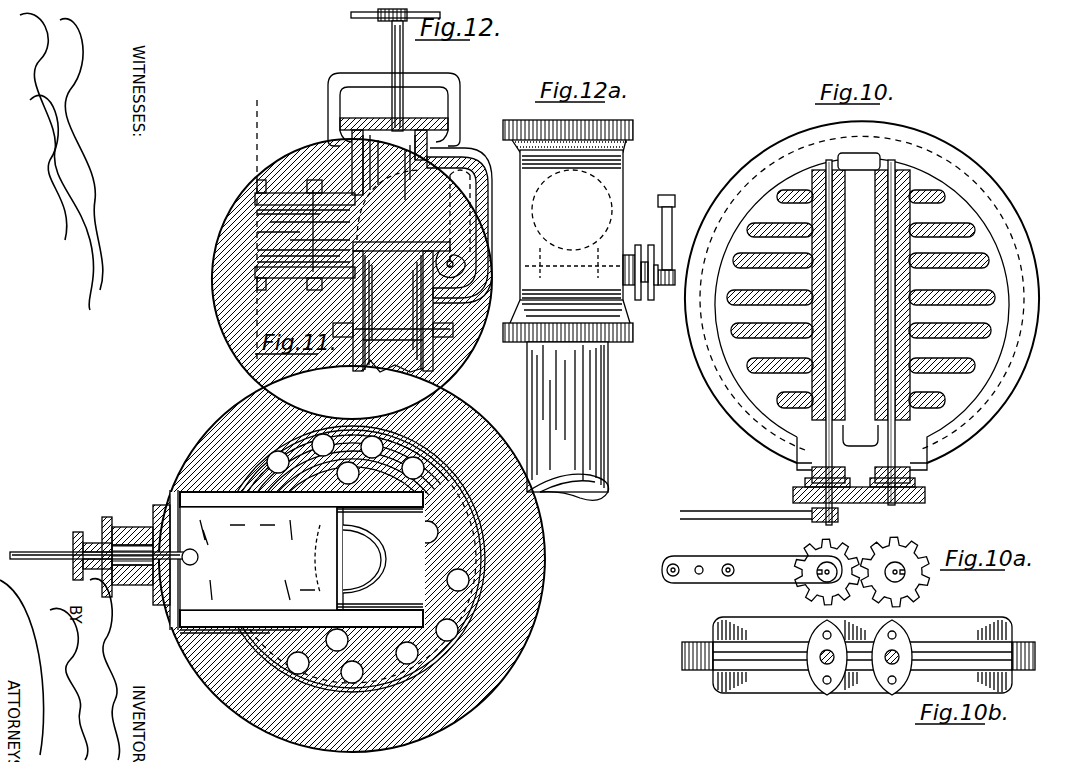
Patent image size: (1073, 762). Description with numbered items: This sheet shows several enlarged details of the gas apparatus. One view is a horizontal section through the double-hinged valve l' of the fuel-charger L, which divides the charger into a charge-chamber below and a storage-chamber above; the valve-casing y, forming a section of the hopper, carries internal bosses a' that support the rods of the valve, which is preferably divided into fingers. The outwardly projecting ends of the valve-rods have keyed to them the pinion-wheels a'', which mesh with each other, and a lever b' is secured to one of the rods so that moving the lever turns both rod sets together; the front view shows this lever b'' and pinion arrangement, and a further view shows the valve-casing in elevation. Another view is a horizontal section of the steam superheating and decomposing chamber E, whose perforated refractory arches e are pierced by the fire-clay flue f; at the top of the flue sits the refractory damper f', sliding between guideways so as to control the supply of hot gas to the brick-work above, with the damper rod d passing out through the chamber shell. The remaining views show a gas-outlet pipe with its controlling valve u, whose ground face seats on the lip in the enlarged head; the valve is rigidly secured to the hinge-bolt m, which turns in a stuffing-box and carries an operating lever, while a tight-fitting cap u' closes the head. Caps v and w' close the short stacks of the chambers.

In FIG. 12, the tight-fitting cap u' is at (394, 109).
In FIG. 12, the valve u is at (373, 230).
In FIG. 12, the tight-fitting cap w' is at (401, 307).
In FIG. 12, the fuel-charger L is at (394, 339).
In FIG. 12A, the fuel-charger L is at (628, 430).
In FIG. 12A, the tight-fitting cap v is at (565, 231).
In FIG. 12A, the hinge-bolt m is at (649, 247).
In FIG. 10, the valve-casing y is at (862, 295).
In FIG. 10B, the valve-casing y is at (858, 656).
In FIG. 10, the double-hinged valve l' is at (861, 295).
In FIG. 10, the lever b' is at (861, 299).
In FIG. 10, the bosses a' is at (860, 339).
In FIG. 10, the pinion-wheels a'' is at (859, 494).
In FIG. 10A, the pinion-wheels a'' is at (862, 572).
In FIG. 10, the lever b'' is at (746, 505).
In FIG. 10A, the lever b'' is at (752, 569).
In FIG. 11, the steam superheating and decomposing chamber E is at (185, 455).
In FIG. 11, the perforated arches e is at (297, 561).
In FIG. 11, the damper f' is at (261, 558).
In FIG. 11, the fire-clay tube or flue f is at (364, 559).
In FIG. 11, the piston rod d is at (104, 549).